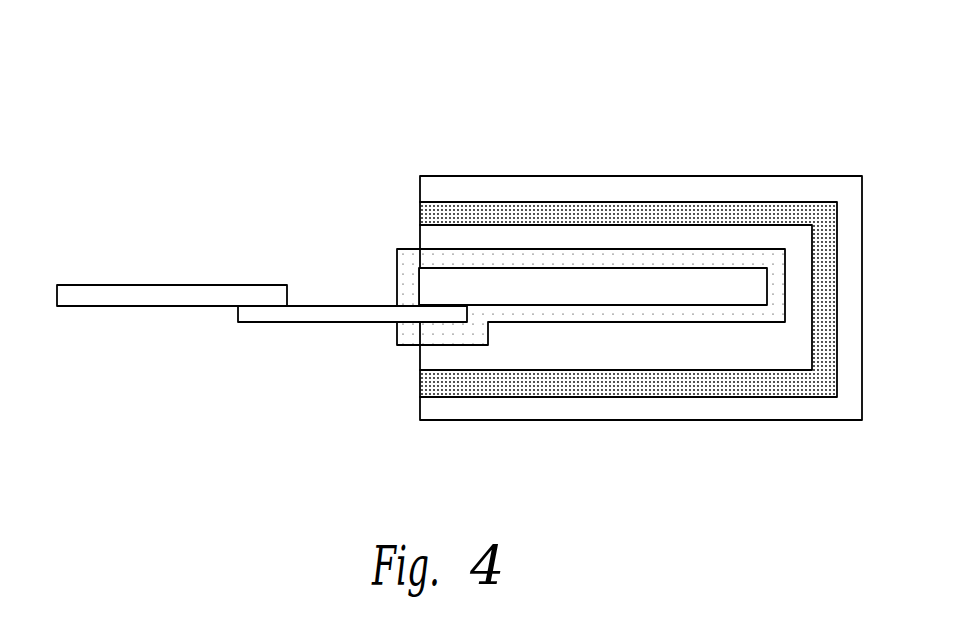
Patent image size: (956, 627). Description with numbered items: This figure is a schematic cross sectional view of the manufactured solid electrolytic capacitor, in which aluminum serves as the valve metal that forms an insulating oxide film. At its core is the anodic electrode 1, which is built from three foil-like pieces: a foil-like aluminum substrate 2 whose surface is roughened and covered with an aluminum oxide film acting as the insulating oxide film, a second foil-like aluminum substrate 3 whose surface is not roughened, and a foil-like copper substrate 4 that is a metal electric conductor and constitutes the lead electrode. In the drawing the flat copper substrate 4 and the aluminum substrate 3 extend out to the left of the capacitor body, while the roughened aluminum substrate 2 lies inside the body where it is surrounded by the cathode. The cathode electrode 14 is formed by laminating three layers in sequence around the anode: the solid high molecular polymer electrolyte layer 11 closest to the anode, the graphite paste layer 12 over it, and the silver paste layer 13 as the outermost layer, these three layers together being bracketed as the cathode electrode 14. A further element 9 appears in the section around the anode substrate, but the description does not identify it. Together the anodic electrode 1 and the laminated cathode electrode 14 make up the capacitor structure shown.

The anodic electrode 1 is at (378, 247).
The foil-like aluminum substrate 2 is at (635, 293).
The foil-like aluminum substrate 3 is at (283, 313).
The foil-like copper substrate 4 is at (128, 302).
The insulating sealing member 9 is at (778, 283).
The solid high molecular polymer electrolyte layer 11 is at (627, 237).
The graphite paste layer 12 is at (567, 215).
The silver paste layer 13 is at (507, 188).
The cathode electrode 14 is at (670, 85).